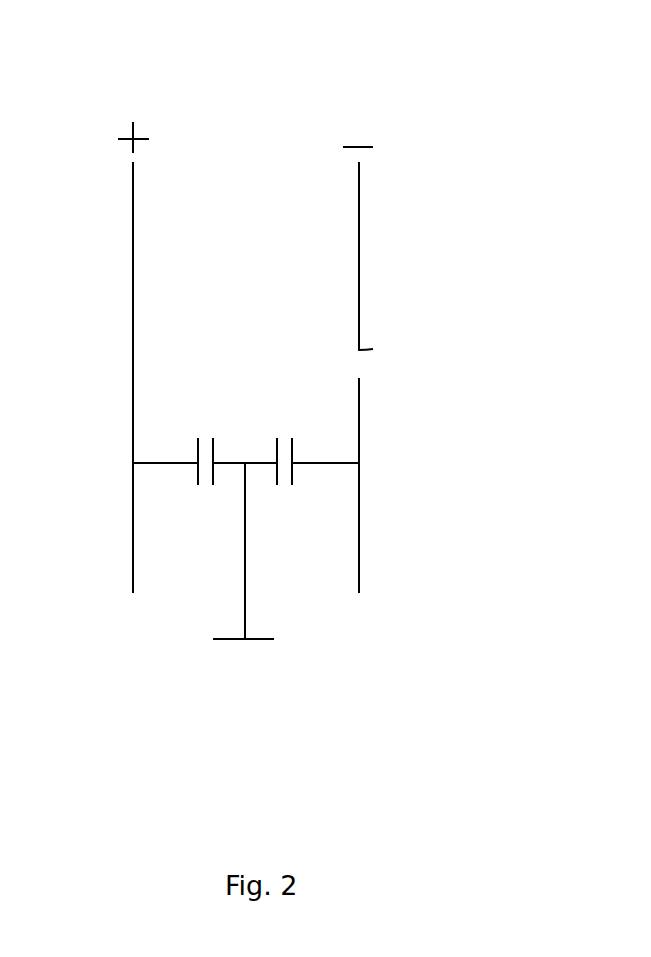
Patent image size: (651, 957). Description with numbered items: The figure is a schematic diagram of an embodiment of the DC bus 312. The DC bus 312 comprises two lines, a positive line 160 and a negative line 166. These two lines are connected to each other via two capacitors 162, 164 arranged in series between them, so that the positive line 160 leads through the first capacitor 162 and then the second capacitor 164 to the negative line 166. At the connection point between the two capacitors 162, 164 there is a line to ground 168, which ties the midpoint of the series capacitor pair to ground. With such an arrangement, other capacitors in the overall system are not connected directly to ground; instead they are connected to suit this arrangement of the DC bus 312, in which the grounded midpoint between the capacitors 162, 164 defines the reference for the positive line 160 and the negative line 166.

The positive line 160 is at (133, 235).
The capacitor 162 is at (210, 445).
The capacitor 164 is at (285, 445).
The negative line 166 is at (366, 370).
The line to ground 168 is at (263, 640).
The DC bus 312 is at (435, 160).